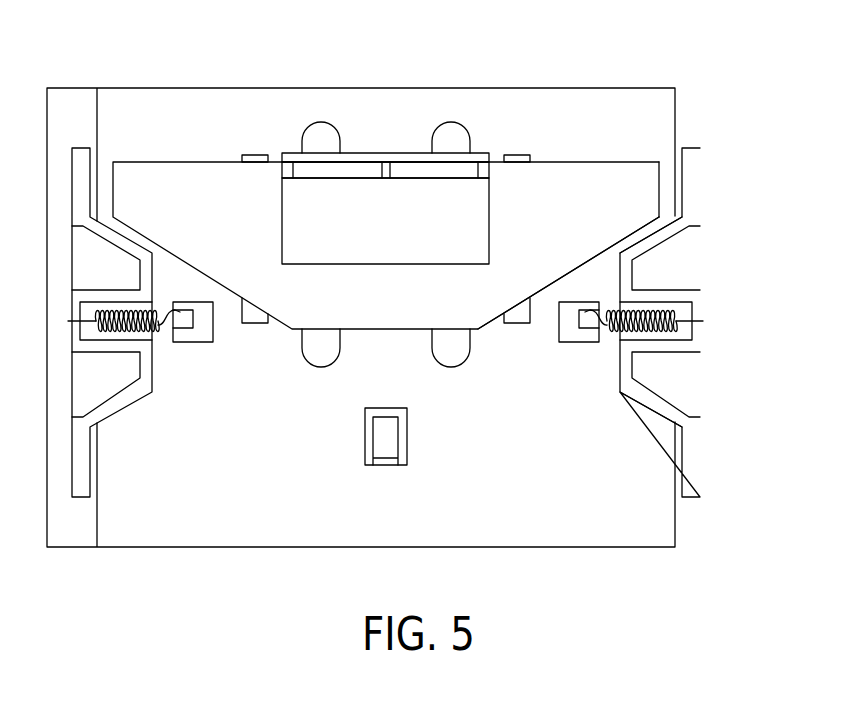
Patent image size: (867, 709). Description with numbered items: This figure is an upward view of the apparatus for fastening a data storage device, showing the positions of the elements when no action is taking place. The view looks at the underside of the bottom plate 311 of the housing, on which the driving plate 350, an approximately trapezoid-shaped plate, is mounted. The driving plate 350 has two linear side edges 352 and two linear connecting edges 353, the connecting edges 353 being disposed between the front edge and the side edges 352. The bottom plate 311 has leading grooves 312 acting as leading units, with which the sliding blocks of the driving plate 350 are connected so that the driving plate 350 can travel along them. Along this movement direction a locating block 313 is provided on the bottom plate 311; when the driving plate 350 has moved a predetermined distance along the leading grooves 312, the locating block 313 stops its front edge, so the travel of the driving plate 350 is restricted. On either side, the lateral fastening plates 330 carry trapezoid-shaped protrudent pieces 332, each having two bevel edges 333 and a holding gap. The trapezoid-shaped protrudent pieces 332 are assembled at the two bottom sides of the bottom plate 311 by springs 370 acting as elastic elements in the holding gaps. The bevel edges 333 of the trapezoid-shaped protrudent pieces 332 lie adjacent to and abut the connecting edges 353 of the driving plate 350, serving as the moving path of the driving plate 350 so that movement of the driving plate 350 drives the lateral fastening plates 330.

The bottom plate 311 is at (663, 525).
The leading grooves 312 is at (453, 131).
The locating block 313 is at (387, 446).
The lateral fastening plates 330 is at (699, 322).
The trapezoid-shaped protrudent pieces 332 is at (678, 392).
The bevel edges 333 is at (653, 232).
The driving plate 350 is at (446, 178).
The side edges 352 is at (658, 186).
The connecting edges 353 is at (593, 262).
The springs 370 is at (647, 327).